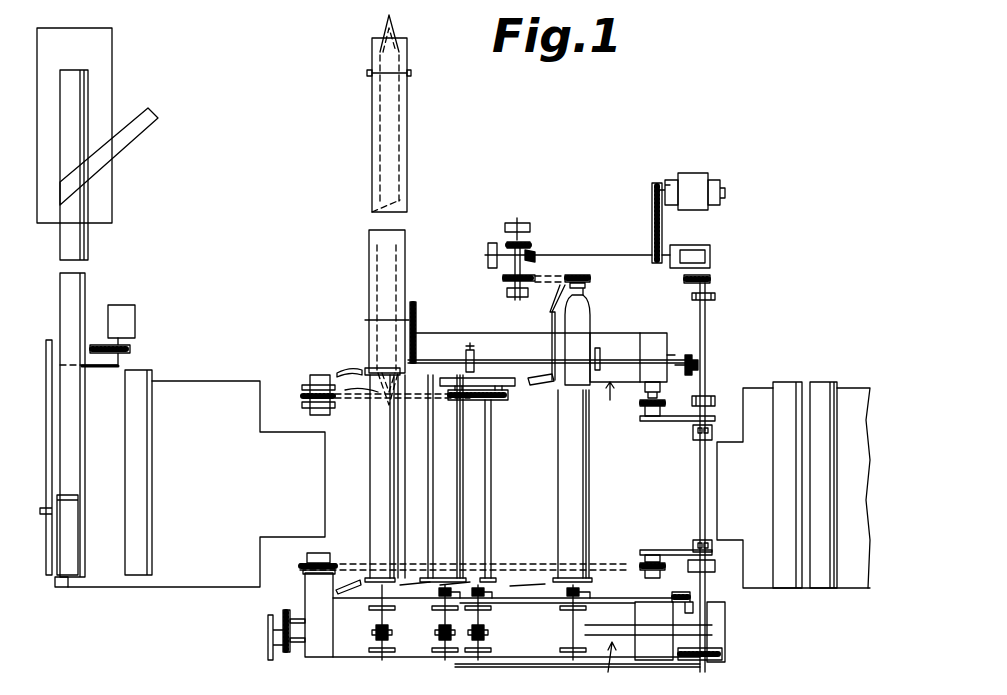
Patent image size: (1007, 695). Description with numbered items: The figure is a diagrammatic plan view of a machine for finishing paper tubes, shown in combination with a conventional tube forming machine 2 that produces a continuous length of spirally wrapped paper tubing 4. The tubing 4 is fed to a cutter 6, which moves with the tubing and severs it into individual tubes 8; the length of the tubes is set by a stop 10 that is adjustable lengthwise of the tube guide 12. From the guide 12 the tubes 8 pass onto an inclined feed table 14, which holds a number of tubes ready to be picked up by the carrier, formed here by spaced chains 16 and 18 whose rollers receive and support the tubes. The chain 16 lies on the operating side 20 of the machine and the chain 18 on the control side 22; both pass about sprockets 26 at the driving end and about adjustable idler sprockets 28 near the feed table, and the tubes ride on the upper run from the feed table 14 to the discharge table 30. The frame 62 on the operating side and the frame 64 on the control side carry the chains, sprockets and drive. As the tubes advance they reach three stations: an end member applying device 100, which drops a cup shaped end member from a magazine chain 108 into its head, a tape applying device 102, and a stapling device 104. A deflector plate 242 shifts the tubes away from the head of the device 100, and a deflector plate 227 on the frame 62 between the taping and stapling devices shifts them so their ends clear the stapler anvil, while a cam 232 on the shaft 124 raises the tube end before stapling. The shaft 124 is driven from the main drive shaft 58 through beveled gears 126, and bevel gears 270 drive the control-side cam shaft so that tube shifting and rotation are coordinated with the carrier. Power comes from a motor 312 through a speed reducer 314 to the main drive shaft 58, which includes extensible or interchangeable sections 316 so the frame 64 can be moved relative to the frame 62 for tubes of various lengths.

The tube forming machine 2 is at (105, 192).
The spirally wrapped paper tubing 4 is at (85, 270).
The cutter 6 is at (108, 368).
The tubes 8 is at (152, 420).
The stop 10 is at (63, 588).
The tube guide 12 is at (60, 492).
The inclined feed table 14 is at (214, 392).
The carrier chain 16 is at (528, 400).
The carrier chain 18 is at (508, 566).
The operating side 20 is at (610, 408).
The control side 22 is at (602, 668).
The sprockets 26 is at (668, 418).
The adjustable idler sprockets 28 is at (337, 410).
The discharge table 30 is at (850, 390).
The main drive shaft 58 is at (705, 336).
The frame 62 is at (424, 336).
The frame 64 is at (412, 650).
The end member applying device 100 is at (386, 344).
The tape applying device 102 is at (497, 378).
The stapling device 104 is at (583, 312).
The chain 108 is at (369, 230).
The shaft 124 is at (478, 355).
The beveled gears 126 is at (710, 370).
The deflector plate 227 is at (542, 388).
The cam 232 is at (610, 348).
The deflector plate 242 is at (352, 368).
The bevel gears 270 is at (715, 598).
The motor 312 is at (692, 178).
The speed reducer 314 is at (695, 250).
The extensible or interchangeable sections 316 is at (700, 485).